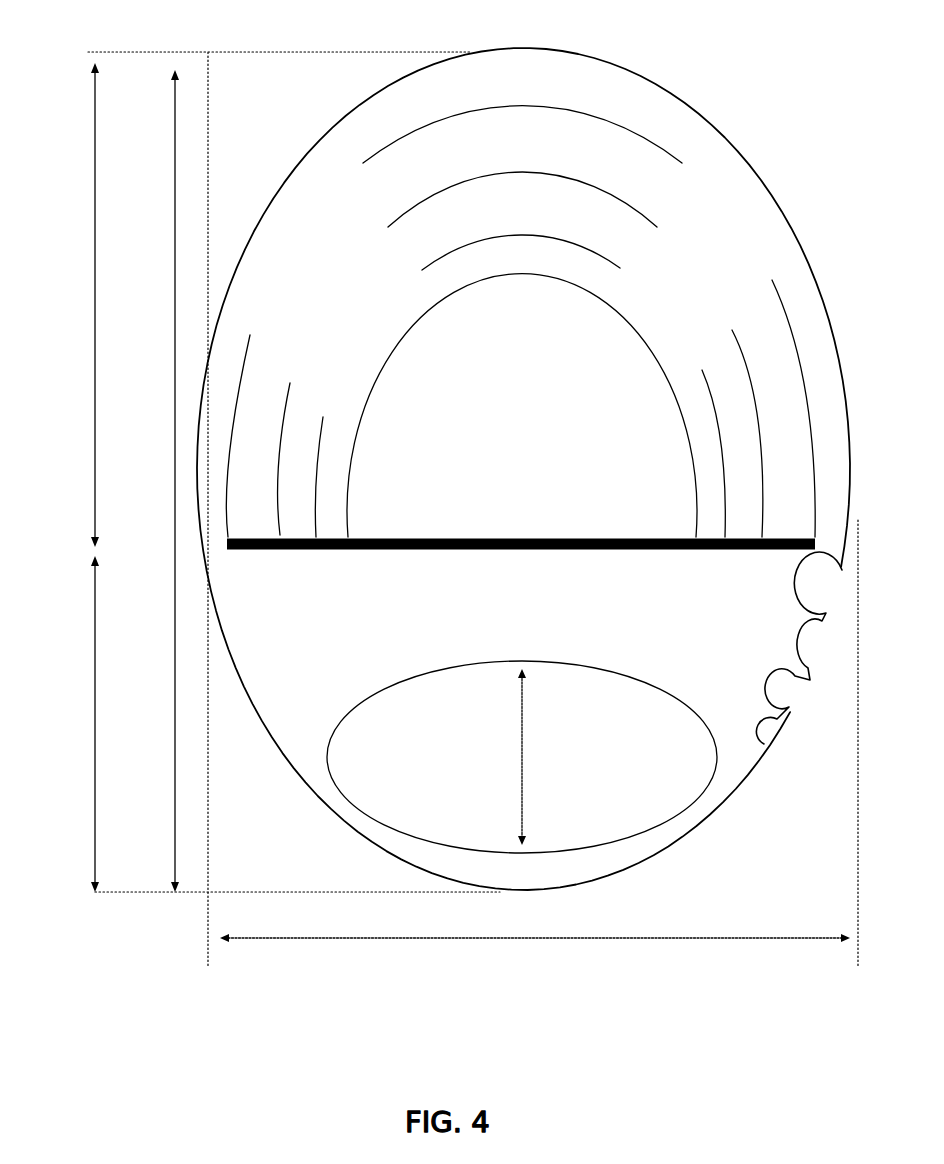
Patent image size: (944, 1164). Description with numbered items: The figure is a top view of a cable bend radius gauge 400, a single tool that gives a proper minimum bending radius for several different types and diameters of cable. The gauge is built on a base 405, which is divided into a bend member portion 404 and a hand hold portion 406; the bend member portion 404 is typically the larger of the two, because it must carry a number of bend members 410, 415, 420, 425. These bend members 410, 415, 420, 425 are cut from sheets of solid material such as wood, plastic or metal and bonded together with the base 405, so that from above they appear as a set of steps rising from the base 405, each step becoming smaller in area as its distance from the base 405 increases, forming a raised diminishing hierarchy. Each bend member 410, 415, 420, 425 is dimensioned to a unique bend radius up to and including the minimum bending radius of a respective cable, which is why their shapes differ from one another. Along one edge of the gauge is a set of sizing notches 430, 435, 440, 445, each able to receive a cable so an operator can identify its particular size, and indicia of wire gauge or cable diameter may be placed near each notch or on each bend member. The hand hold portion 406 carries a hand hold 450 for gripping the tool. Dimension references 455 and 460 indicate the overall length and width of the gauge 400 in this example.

The cable bend radius gauge 400 is at (523, 456).
The bend member portion 404 is at (113, 305).
The base 405 is at (637, 115).
The hand hold portion 406 is at (114, 724).
The bend member 410 is at (615, 185).
The bend member 415 is at (588, 232).
The bend member 420 is at (575, 283).
The bend member 425 is at (595, 347).
The sizing notch 430 is at (812, 583).
The sizing notch 435 is at (800, 647).
The sizing notch 440 is at (782, 693).
The sizing notch 445 is at (760, 742).
The hand hold 450 is at (522, 757).
The length dimension 230 mm 455 is at (110, 470).
The width dimension 150 mm 460 is at (532, 952).